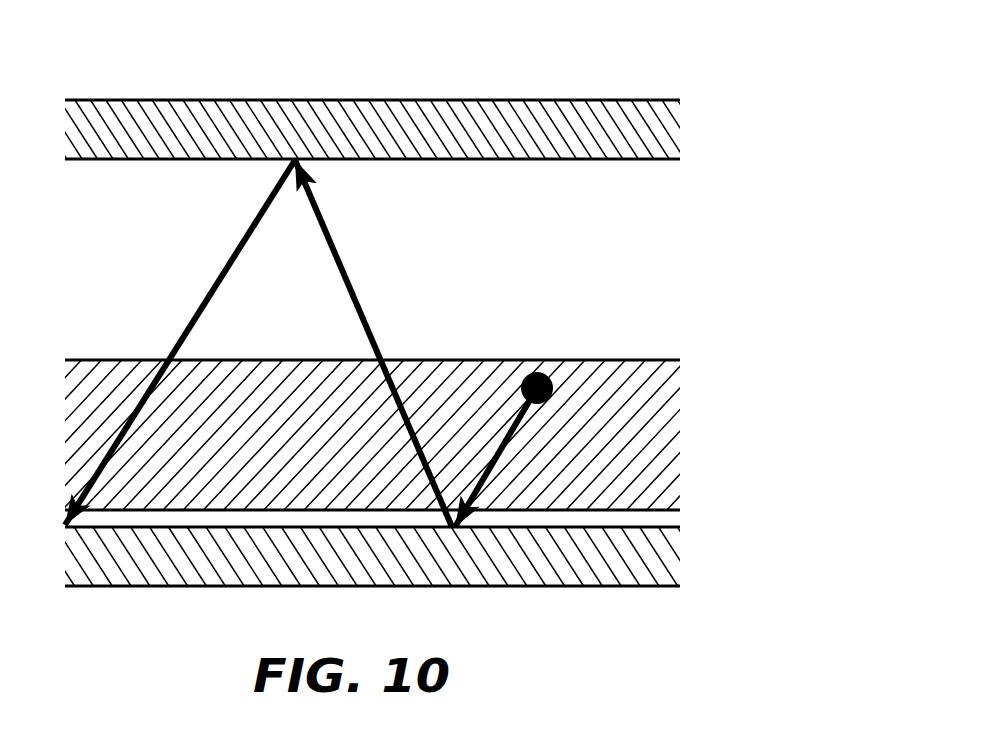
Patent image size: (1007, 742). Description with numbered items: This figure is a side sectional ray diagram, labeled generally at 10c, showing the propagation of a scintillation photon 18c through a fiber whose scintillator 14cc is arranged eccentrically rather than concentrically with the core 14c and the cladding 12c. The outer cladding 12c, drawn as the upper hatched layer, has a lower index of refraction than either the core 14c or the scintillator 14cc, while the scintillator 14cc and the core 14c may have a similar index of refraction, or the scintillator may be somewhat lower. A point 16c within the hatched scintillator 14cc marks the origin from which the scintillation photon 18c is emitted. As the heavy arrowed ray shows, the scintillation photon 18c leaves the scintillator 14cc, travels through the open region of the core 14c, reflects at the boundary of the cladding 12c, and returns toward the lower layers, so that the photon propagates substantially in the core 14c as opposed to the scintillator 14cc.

The light emitting device 10c is at (112, 60).
The cladding 12c is at (587, 125).
The core 14c is at (663, 210).
The scintillator 14cc is at (632, 445).
The light source 16c is at (536, 372).
The scintillation photon 18c is at (340, 248).